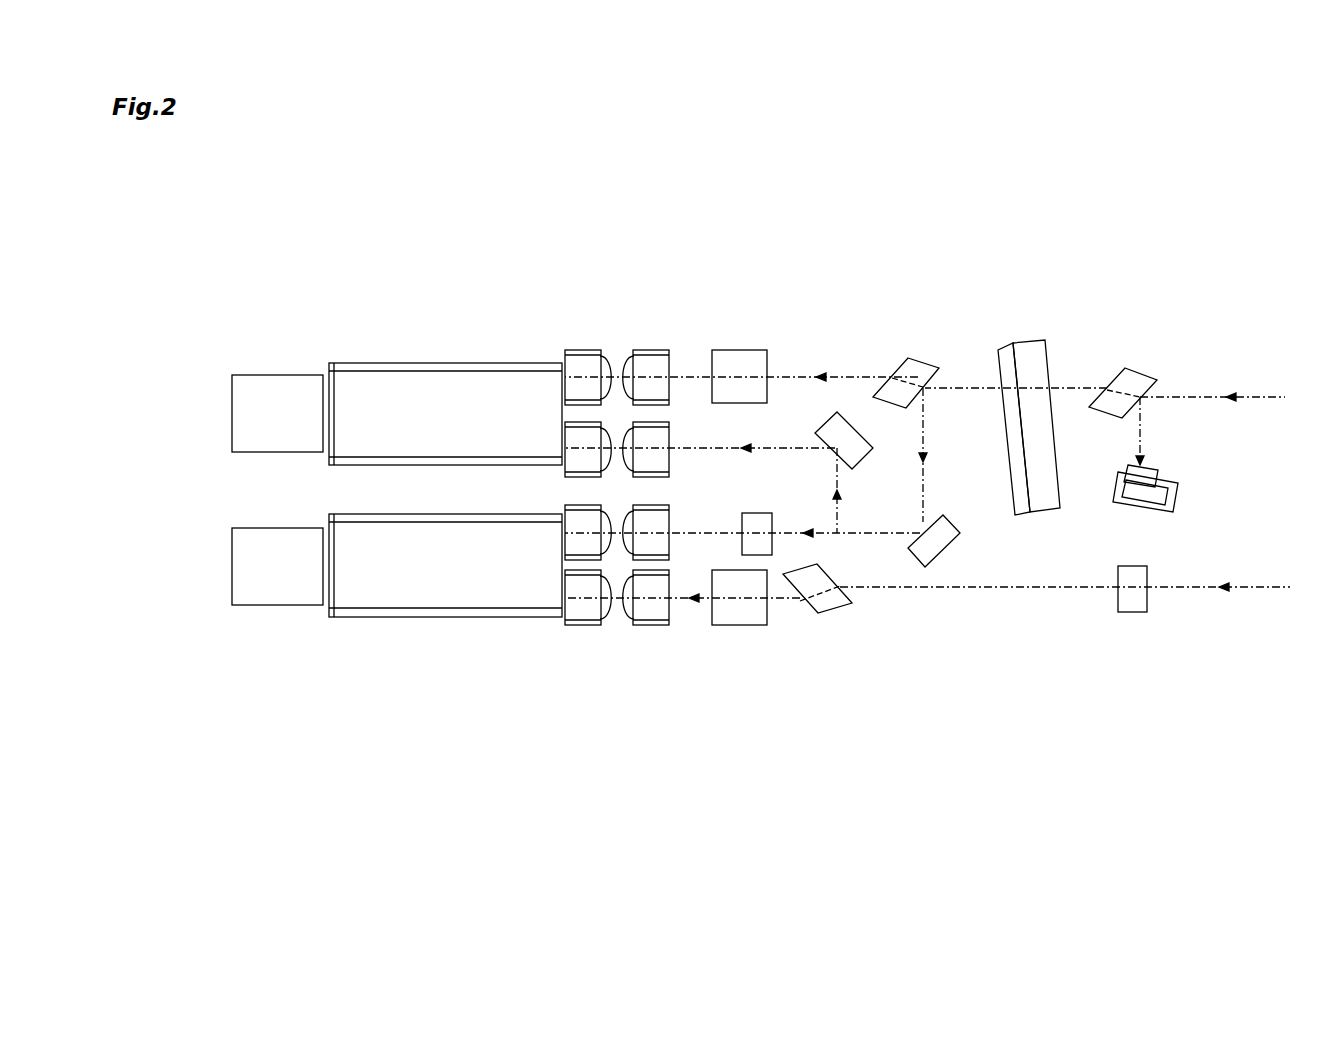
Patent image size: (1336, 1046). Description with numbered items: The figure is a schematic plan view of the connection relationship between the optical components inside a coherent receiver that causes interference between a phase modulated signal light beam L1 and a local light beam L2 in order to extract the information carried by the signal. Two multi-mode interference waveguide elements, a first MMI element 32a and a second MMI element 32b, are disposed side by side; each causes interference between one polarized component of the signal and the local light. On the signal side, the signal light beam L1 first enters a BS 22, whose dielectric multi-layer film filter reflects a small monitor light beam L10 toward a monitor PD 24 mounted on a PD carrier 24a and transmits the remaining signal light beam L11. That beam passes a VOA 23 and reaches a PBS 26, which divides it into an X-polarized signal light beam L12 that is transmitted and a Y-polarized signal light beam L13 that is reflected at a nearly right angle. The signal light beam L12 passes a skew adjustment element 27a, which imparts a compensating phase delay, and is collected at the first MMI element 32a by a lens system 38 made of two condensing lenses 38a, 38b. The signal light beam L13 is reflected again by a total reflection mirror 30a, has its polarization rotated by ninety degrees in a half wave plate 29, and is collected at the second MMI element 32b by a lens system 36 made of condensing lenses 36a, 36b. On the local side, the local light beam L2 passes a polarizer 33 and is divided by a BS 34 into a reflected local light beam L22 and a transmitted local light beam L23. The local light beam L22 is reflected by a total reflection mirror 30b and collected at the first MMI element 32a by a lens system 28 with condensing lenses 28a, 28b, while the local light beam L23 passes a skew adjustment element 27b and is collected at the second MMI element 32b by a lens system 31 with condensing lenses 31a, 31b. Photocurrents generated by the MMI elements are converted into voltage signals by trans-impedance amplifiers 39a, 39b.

The beam splitter 22 is at (1114, 378).
The variable optical attenuator 23 is at (1032, 352).
The monitor photodiode 24 is at (1154, 492).
The PD carrier 24a is at (1125, 503).
The polarization dependent beam splitter 26 is at (924, 361).
The skew adjustment element 27a is at (737, 375).
The skew adjustment element 27b is at (743, 600).
The lens system 28 is at (533, 427).
The condensing lens 28a is at (575, 430).
The condensing lens 28b is at (650, 463).
The half wave plate 29 is at (752, 528).
The total reflection mirror 30a is at (942, 570).
The total reflection mirror 30b is at (862, 465).
The lens system 31 is at (636, 705).
The condensing lens 31a is at (578, 625).
The condensing lens 31b is at (658, 625).
The first MMI element 32a is at (392, 382).
The second MMI element 32b is at (378, 590).
The polarizer 33 is at (1134, 600).
The beam splitter 34 is at (835, 618).
The lens system 36 is at (538, 552).
The condensing lens 36a is at (578, 532).
The condensing lens 36b is at (652, 542).
The lens system 38 is at (645, 277).
The condensing lens 38a is at (578, 350).
The condensing lens 38b is at (656, 350).
The amplifier 39a is at (272, 418).
The amplifier 39b is at (272, 565).
The signal light beam L1 is at (1264, 395).
The local light beam L2 is at (1237, 592).
The monitor light beam L10 is at (1129, 412).
The signal light beam L11 is at (1067, 387).
The signal light beam L12 is at (857, 375).
The signal light beam L13 is at (862, 536).
The local light beam L22 is at (773, 444).
The local light beam L23 is at (706, 625).